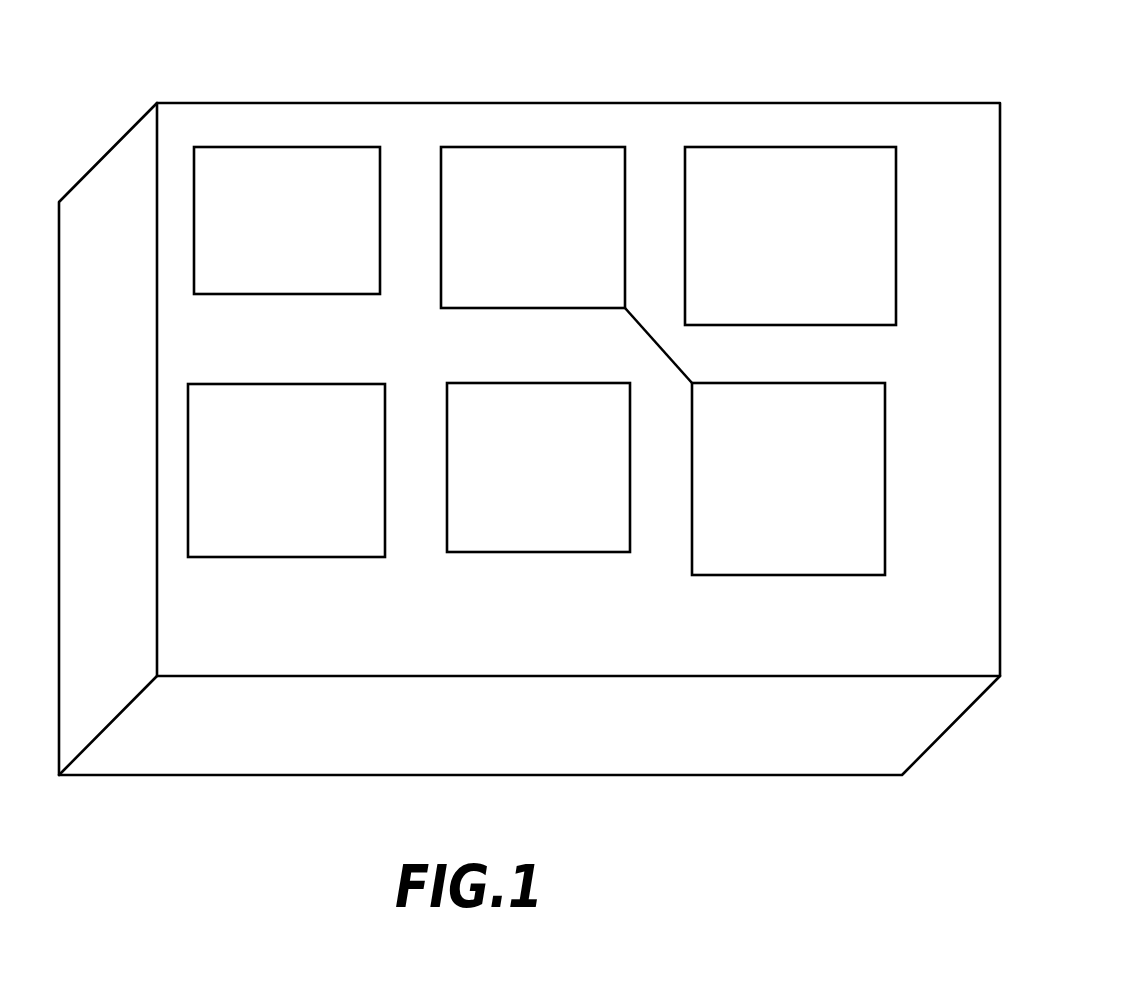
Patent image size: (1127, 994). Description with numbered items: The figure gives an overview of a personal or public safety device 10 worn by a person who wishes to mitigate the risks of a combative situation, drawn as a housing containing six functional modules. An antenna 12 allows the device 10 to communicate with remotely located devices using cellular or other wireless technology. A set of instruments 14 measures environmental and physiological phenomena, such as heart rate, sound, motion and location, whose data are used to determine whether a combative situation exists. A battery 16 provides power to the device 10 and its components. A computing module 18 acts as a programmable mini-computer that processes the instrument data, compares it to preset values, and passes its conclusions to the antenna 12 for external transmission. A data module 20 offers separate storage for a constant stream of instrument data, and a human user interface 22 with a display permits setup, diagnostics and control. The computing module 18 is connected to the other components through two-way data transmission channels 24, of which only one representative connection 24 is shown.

The personal or public safety device 10 is at (965, 160).
The antenna 12 is at (257, 172).
The instruments 14 is at (490, 172).
The battery 16 is at (723, 172).
The computing module 18 is at (800, 513).
The data module 20 is at (568, 513).
The human user interface 22 is at (335, 513).
The two-way data transmission channel 24 is at (683, 362).